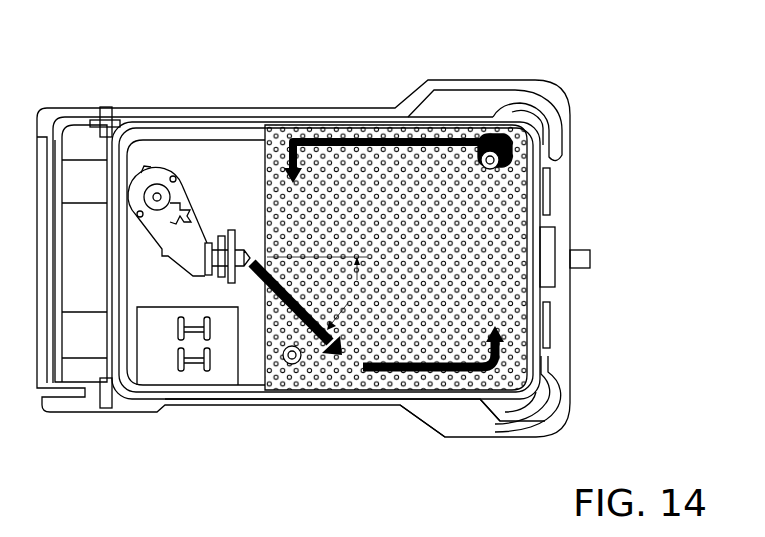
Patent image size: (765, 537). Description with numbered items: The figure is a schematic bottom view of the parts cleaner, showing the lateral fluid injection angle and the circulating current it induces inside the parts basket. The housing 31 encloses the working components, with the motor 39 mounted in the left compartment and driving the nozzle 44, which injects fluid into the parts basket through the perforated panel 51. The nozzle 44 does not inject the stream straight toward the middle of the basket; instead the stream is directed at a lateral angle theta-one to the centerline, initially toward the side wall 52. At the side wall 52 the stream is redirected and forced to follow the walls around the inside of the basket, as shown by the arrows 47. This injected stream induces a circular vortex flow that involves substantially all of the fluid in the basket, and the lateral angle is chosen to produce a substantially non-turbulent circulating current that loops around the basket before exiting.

The housing case 31 is at (194, 387).
The motor 39 is at (140, 171).
The nozzle 44 is at (242, 230).
The perforated panel 51 is at (262, 157).
The arrows 47 is at (346, 383).
The side wall 52 is at (430, 382).